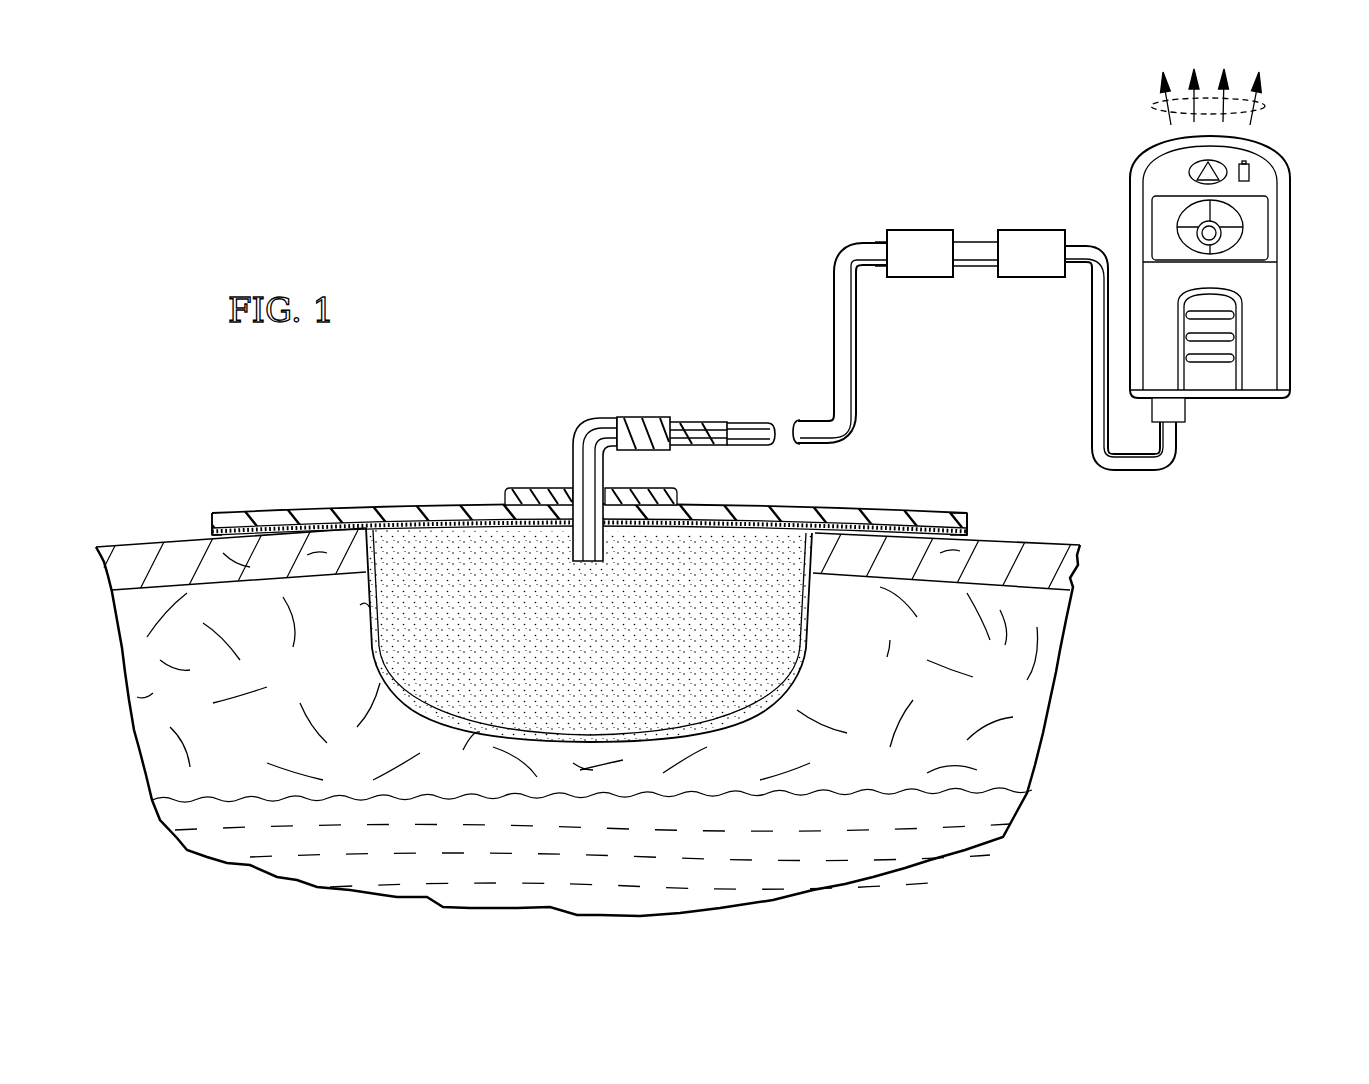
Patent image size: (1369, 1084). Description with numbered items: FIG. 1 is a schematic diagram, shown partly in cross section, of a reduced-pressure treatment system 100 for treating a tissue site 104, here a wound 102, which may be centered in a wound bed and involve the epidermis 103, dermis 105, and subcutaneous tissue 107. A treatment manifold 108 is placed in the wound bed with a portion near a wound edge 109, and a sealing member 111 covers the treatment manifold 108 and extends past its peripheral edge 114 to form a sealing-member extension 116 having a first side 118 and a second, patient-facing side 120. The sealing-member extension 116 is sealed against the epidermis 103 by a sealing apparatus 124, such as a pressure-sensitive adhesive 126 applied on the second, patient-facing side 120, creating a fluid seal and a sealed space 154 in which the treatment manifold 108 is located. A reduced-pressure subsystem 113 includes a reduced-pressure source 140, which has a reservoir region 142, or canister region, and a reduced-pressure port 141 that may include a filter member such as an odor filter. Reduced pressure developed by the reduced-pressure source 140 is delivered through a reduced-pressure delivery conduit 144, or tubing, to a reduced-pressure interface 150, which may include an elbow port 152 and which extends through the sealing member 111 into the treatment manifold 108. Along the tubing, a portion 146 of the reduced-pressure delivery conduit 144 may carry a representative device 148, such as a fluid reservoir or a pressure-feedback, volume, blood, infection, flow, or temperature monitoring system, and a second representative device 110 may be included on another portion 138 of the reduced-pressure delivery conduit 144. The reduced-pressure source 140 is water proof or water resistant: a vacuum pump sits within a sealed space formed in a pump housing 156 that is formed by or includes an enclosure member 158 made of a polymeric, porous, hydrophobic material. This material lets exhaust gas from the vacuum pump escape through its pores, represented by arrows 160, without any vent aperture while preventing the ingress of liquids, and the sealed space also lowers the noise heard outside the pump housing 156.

The reduced-pressure treatment system 100 is at (519, 364).
The wound 102 is at (818, 600).
The epidermis 103 is at (95, 562).
The tissue site 104 is at (482, 742).
The dermis 105 is at (222, 747).
The subcutaneous tissue 107 is at (572, 863).
The treatment manifold 108 is at (571, 645).
The wound edge 109 is at (382, 522).
The second representative device 110 is at (918, 230).
The sealing member 111 is at (962, 513).
The reduced-pressure subsystem 113 is at (1219, 266).
The peripheral edge 114 is at (366, 650).
The sealing-member extension 116 is at (276, 500).
The first side 118 is at (228, 510).
The second, patient-facing side 120 is at (318, 516).
The sealing apparatus 124 is at (972, 530).
The pressure-sensitive adhesive 126 is at (208, 530).
The portion of the reduced-pressure delivery conduit 138 is at (882, 237).
The reduced-pressure source 140 is at (1219, 266).
The reduced-pressure port 141 is at (1188, 412).
The reservoir region 142 is at (1266, 327).
The reduced-pressure delivery conduit 144 is at (752, 417).
The portion of the reduced-pressure delivery conduit 146 is at (993, 268).
The representative device 148 is at (1028, 230).
The reduced-pressure interface 150 is at (627, 414).
The elbow port 152 is at (580, 420).
The sealed space 154 is at (368, 610).
The pump housing 156 is at (1135, 160).
The enclosure member 158 is at (1292, 196).
The arrows 160 is at (1150, 106).